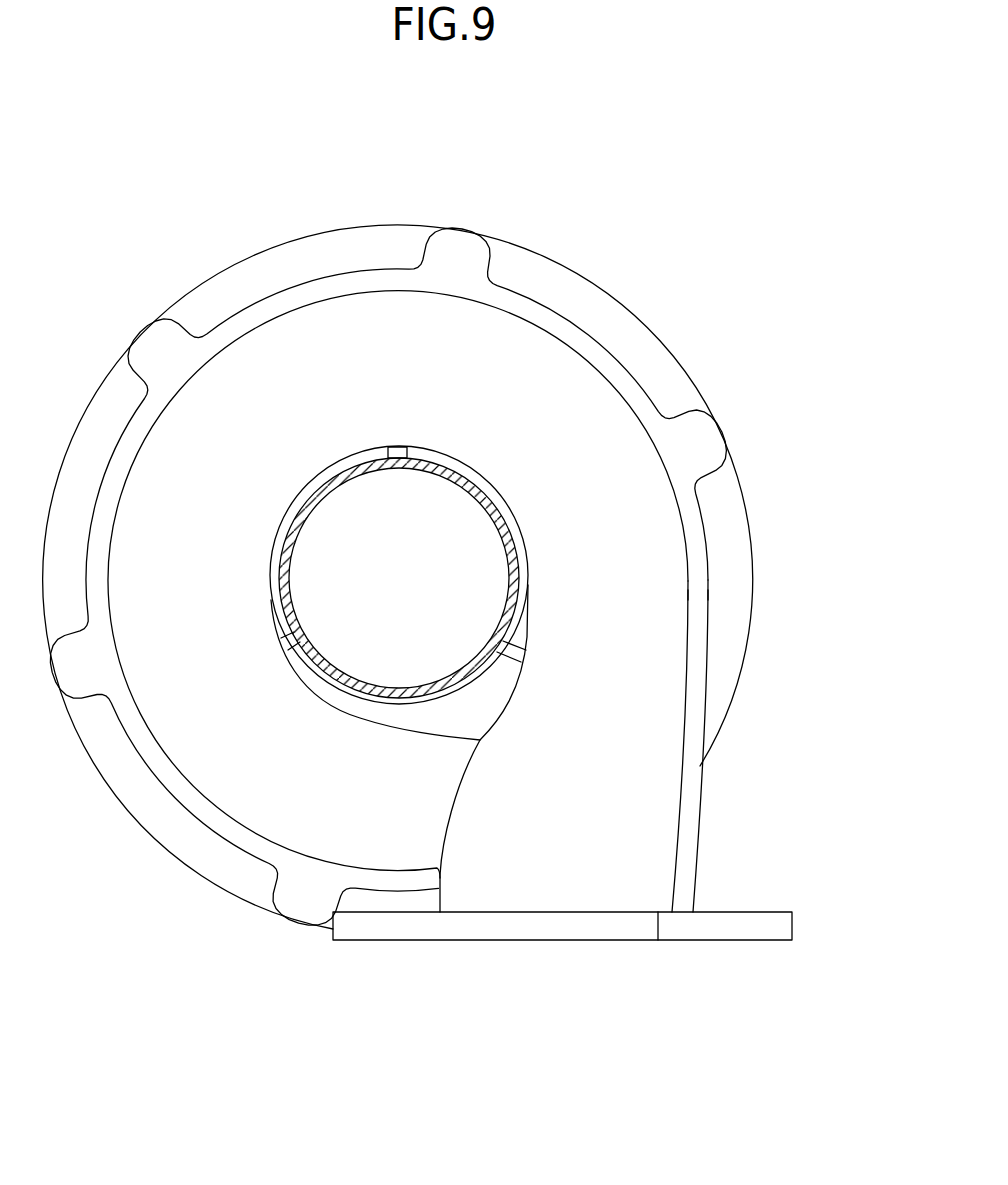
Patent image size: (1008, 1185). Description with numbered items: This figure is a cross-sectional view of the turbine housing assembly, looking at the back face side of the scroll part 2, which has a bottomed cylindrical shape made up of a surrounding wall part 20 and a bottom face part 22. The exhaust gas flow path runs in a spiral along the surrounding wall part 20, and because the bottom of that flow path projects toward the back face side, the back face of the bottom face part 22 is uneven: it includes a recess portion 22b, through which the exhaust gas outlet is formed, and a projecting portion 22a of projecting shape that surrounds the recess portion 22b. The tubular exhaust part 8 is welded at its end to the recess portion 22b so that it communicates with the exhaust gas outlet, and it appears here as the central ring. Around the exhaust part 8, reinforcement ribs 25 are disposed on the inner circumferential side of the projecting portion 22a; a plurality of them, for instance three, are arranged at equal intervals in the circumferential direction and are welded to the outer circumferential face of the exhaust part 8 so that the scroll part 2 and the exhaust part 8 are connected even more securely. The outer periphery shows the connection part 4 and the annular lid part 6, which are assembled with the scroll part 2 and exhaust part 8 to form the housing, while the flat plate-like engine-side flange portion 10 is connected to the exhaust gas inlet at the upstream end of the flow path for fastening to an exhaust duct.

The scroll part 2 is at (540, 314).
The connection part 4 is at (255, 249).
The annular lid part 6 is at (383, 263).
The exhaust part 8 is at (314, 474).
The engine-side flange portion 10 is at (618, 925).
The surrounding wall part 20 is at (573, 343).
The bottom face part 22 is at (575, 691).
The projecting portion 22a is at (505, 508).
The recess portion 22b is at (636, 557).
The reinforcement ribs 25 is at (408, 450).